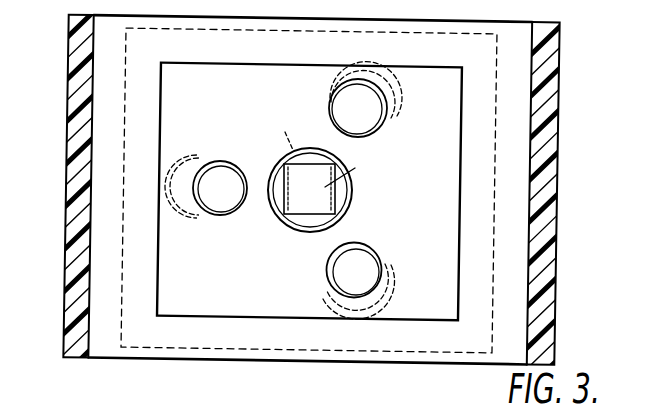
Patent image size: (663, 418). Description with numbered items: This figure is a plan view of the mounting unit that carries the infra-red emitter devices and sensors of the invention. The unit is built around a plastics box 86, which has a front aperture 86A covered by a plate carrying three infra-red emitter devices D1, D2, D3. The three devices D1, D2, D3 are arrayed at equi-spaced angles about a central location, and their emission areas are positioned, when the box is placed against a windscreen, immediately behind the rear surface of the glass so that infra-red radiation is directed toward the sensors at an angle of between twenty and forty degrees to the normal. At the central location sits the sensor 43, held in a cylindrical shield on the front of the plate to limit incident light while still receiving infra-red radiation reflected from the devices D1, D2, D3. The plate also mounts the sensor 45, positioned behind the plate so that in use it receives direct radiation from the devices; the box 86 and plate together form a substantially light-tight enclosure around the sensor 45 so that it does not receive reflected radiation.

The plastics box 86 is at (72, 210).
The front aperture 86A is at (157, 283).
The infra-red emitter device D1 is at (228, 173).
The infra-red emitter device D2 is at (370, 120).
The infra-red emitter device D3 is at (367, 258).
The sensor 43 is at (295, 200).
The sensor 45 is at (310, 220).